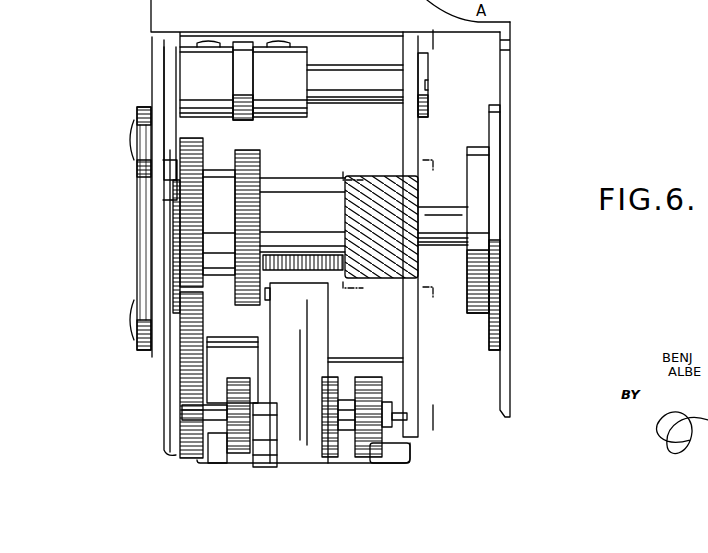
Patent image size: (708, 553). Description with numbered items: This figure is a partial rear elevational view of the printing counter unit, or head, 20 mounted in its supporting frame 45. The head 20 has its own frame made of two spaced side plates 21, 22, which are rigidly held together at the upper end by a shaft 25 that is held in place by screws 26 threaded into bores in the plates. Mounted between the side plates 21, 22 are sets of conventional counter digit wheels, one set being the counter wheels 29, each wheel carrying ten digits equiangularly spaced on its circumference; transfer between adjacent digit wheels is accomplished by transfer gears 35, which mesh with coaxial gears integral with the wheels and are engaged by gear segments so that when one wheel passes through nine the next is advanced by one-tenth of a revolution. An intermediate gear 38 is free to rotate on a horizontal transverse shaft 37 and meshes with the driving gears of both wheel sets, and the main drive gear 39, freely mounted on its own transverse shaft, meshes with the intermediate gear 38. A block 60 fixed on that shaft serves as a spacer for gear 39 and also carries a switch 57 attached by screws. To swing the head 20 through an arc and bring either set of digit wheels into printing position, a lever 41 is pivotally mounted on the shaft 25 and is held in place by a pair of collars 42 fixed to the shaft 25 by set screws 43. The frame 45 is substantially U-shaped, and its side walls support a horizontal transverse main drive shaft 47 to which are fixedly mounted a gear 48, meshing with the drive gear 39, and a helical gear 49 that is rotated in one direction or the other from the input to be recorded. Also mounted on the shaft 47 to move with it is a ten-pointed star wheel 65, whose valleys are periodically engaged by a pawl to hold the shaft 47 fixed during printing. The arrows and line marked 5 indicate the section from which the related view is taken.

The section line 5- 5 is at (438, 42).
The counter unit 20 is at (437, 146).
The side plate 21 is at (169, 430).
The side plate 22 is at (418, 328).
The shaft 25 is at (364, 49).
The screws 26 is at (428, 68).
The counter digit wheels 29 is at (210, 406).
The transfer gears 35 is at (334, 377).
The shaft 37 is at (391, 358).
The intermediate gear 38 is at (181, 381).
The drive gear 39 is at (198, 287).
The lever 41 is at (245, 43).
The collars 42 is at (221, 56).
The set screws 43 is at (280, 44).
The frame 45 is at (527, 183).
The shaft 47 is at (453, 201).
The gear 48 is at (193, 139).
The helical gear 49 is at (378, 176).
The switch 57 is at (319, 329).
The block 60 is at (318, 187).
The star wheel 65 is at (261, 160).